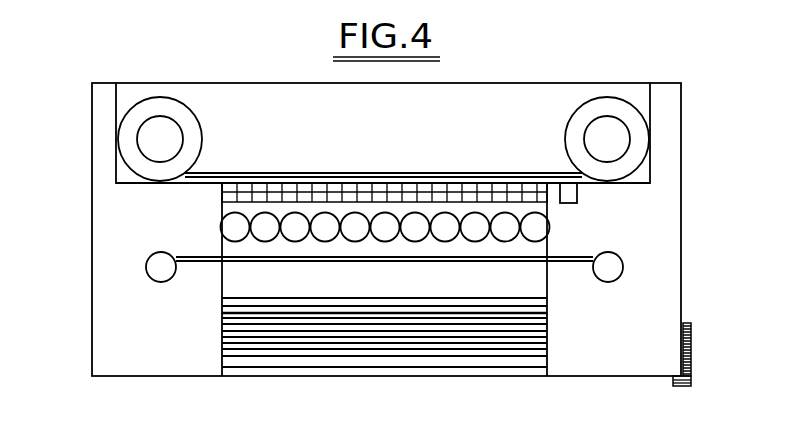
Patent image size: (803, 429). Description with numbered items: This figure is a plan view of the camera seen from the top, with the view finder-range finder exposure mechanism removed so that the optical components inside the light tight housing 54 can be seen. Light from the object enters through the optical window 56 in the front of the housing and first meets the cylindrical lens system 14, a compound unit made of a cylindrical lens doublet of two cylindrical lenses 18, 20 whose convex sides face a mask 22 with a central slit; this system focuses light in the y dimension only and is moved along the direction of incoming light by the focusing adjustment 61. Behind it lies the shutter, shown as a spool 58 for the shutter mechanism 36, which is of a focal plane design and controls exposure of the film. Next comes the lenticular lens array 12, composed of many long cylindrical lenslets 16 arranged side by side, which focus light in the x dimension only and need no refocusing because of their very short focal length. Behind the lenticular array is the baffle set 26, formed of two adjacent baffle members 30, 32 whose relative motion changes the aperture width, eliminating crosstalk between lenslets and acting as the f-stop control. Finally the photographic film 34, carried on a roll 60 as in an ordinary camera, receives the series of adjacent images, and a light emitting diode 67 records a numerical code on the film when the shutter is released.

The lenticular lens array 12 is at (222, 230).
The cylindrical lens system 14 is at (357, 327).
The lenslets 16 is at (234, 242).
The cylindrical lens 18 is at (222, 306).
The cylindrical lens 20 is at (222, 348).
The mask 22 is at (222, 330).
The baffle set 26 is at (222, 192).
The baffle member 30 is at (224, 185).
The baffle member 32 is at (222, 206).
The photographic film 34 is at (390, 173).
The shutter mechanism 36 is at (512, 260).
The light tight housing 54 is at (92, 248).
The optical window 56 is at (222, 363).
The shutter spool 58 is at (623, 257).
The film roll 60 is at (647, 128).
The focusing adjustment 61 is at (691, 378).
The light emitting diode 67 is at (577, 195).